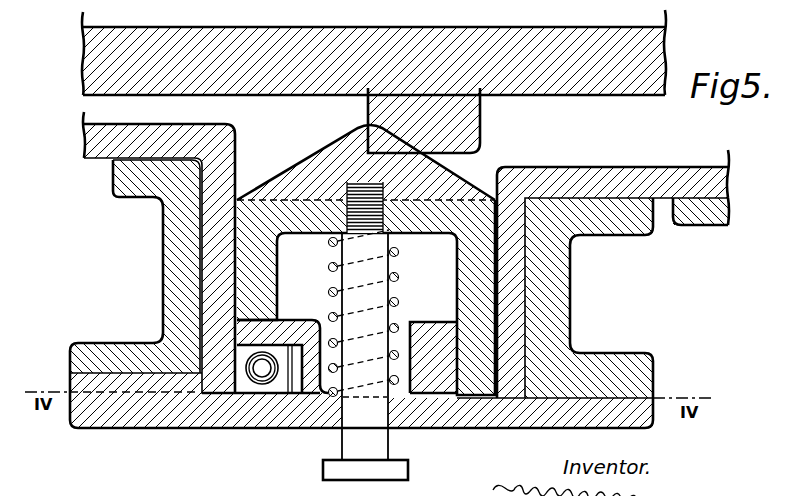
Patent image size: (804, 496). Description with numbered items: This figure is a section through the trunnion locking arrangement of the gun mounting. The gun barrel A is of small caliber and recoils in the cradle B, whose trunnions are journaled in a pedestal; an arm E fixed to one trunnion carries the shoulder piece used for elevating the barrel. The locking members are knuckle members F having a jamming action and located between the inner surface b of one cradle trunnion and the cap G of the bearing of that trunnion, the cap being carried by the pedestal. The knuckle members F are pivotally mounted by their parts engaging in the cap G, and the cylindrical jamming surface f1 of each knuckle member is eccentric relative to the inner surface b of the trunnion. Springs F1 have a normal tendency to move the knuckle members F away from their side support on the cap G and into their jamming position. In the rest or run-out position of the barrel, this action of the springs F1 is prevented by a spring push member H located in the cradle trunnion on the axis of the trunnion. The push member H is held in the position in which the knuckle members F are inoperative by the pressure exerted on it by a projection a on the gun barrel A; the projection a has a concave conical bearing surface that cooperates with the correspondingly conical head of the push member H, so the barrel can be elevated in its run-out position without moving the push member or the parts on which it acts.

The gun barrel A is at (655, 60).
The projection a is at (463, 126).
The spring push member H is at (303, 165).
The cradle B is at (103, 160).
The inner surface of the cradle trunnion b is at (213, 397).
The arm E is at (708, 213).
The cap of the trunnion bearing G is at (133, 410).
The cylindrical jamming surface f1 is at (297, 319).
The springs F1 is at (260, 381).
The knuckle members F is at (282, 384).